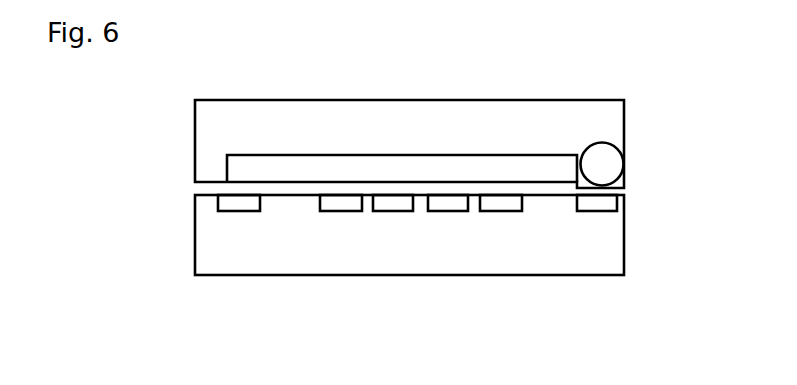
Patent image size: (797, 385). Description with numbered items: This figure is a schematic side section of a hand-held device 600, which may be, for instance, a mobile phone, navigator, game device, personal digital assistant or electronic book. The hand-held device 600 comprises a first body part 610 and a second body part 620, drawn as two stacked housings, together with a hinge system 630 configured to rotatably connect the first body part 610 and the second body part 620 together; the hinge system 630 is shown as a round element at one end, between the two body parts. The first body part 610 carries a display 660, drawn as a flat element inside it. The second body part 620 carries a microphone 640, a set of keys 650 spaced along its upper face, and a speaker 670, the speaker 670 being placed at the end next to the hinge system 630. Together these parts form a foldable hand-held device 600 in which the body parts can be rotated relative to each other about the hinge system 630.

The hand-held device 600 is at (211, 75).
The first body part 610 is at (205, 132).
The second body part 620 is at (205, 222).
The hinge system 630 is at (625, 160).
The microphone 640 is at (238, 205).
The set of keys 650 is at (504, 205).
The display 660 is at (327, 165).
The speaker 670 is at (594, 205).